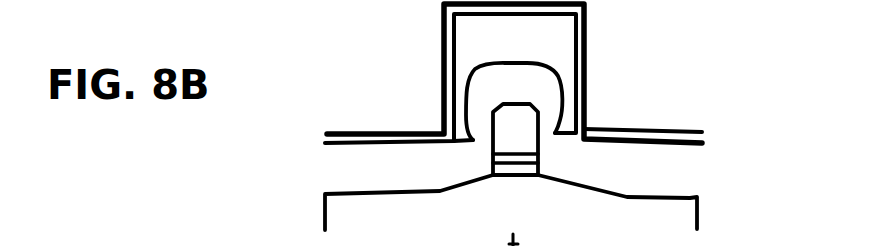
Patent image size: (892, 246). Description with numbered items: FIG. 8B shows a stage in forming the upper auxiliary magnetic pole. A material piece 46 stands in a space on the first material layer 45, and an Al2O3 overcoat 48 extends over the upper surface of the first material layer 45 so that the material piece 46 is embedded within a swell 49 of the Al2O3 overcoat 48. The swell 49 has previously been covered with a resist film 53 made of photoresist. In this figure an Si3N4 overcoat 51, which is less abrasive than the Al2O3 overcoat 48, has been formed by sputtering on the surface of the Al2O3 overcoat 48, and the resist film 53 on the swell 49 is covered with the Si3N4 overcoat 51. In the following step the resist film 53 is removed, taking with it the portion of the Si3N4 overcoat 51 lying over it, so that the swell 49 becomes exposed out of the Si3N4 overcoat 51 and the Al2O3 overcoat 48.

The first material layer 45 is at (688, 192).
The material piece 46 is at (505, 104).
The Al2O3 overcoat 48 is at (349, 160).
The swell 49 is at (482, 68).
The Si3N4 overcoat 51 is at (398, 130).
The resist film 53 is at (557, 34).